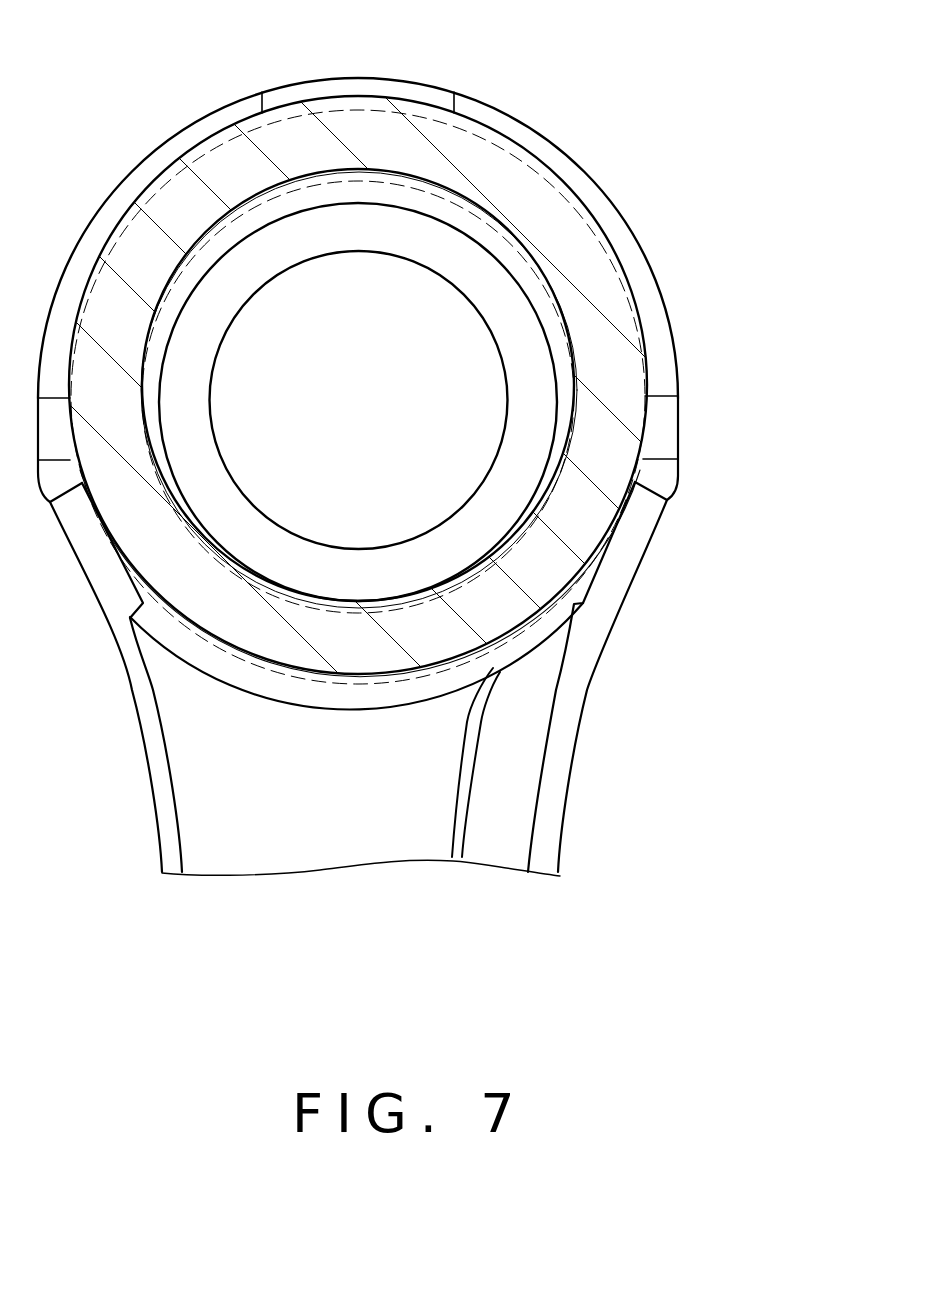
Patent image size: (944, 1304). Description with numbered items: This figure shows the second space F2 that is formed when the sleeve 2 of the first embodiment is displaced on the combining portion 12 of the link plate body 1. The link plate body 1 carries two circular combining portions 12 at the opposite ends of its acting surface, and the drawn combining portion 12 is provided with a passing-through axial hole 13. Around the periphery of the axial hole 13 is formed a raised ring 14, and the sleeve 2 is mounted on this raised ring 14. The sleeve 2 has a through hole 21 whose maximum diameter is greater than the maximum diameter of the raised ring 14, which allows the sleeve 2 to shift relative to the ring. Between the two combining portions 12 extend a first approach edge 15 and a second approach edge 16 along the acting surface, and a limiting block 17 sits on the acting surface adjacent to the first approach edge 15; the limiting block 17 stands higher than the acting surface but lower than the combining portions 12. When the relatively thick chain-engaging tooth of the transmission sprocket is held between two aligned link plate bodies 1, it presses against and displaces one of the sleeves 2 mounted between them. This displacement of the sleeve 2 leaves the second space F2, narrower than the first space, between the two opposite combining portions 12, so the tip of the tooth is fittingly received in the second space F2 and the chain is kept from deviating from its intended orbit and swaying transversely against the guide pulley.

The link plate body 1 is at (556, 864).
The sleeve 2 is at (500, 170).
The through hole 21 is at (415, 170).
The combining portion 12 is at (560, 612).
The axial hole 13 is at (447, 328).
The raised ring 14 is at (527, 393).
The first approach edge 15 is at (547, 852).
The second approach edge 16 is at (172, 822).
The limiting block 17 is at (510, 791).
The second space F2 is at (352, 676).